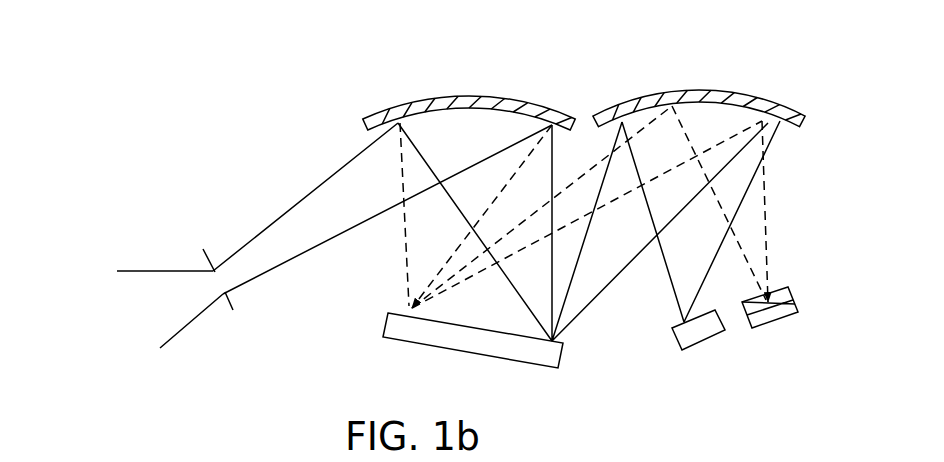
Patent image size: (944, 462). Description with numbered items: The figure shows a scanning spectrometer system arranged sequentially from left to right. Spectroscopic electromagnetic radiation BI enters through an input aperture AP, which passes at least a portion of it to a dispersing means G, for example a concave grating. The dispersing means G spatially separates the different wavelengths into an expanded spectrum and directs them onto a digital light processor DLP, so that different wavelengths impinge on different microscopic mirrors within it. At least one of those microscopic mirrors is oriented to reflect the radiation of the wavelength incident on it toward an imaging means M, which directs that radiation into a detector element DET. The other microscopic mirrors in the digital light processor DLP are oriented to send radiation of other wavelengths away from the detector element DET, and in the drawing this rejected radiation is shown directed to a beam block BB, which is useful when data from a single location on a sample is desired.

The dispersing means G is at (508, 93).
The imaging means M is at (712, 86).
The input aperture AP is at (203, 247).
The spectroscopic electromagnetic radiation BI is at (152, 315).
The digital light processor DLP is at (508, 378).
The detector element DET is at (679, 358).
The beam block BB is at (778, 330).